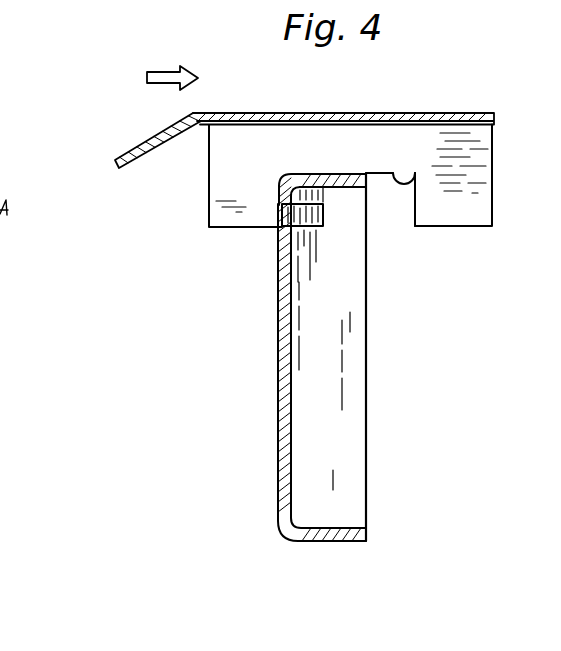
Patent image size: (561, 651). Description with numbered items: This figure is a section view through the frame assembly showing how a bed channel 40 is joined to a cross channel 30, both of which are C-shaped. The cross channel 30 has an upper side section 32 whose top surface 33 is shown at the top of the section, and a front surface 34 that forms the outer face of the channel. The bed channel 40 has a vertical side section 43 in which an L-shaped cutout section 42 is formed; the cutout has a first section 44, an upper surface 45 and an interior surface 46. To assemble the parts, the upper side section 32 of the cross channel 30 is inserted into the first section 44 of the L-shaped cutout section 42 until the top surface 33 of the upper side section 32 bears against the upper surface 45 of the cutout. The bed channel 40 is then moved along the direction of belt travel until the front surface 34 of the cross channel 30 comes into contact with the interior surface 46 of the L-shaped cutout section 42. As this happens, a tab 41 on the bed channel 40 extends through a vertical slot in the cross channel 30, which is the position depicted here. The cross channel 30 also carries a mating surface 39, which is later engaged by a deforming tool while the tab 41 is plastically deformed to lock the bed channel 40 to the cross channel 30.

The cross channel 30 is at (277, 345).
The upper side section 32 is at (306, 173).
The top surface 33 is at (330, 170).
The front surface 34 is at (277, 305).
The mating surface 39 is at (292, 380).
The bed channel 40 is at (457, 113).
The tab 41 is at (306, 222).
The L-shaped cutout section 42 is at (427, 173).
The vertical side section 43 is at (472, 167).
The first section 44 is at (394, 198).
The upper surface 45 is at (350, 170).
The interior surface 46 is at (279, 190).